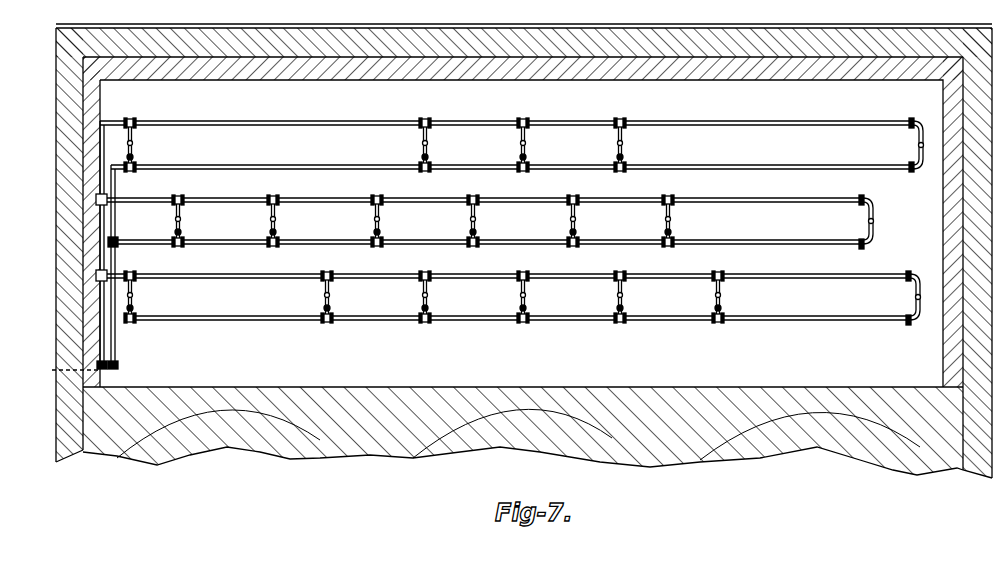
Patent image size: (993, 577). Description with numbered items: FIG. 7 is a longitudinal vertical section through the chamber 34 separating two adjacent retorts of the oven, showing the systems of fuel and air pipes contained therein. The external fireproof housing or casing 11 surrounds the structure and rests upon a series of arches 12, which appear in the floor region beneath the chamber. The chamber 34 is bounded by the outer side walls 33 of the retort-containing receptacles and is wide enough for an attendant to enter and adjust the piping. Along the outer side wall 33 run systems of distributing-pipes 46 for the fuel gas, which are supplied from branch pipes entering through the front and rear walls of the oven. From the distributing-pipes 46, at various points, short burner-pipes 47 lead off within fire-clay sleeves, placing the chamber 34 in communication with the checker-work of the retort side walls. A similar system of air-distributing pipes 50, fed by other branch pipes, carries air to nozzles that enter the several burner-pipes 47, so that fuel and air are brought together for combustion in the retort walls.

The external housing or casing 11 is at (655, 32).
The arches 12 is at (527, 438).
The outer side walls 33 is at (521, 233).
The chambers 34 is at (823, 370).
The distributing-pipes 46 is at (571, 121).
The burner-pipes 47 is at (134, 148).
The air-distributing pipes 50 is at (258, 168).